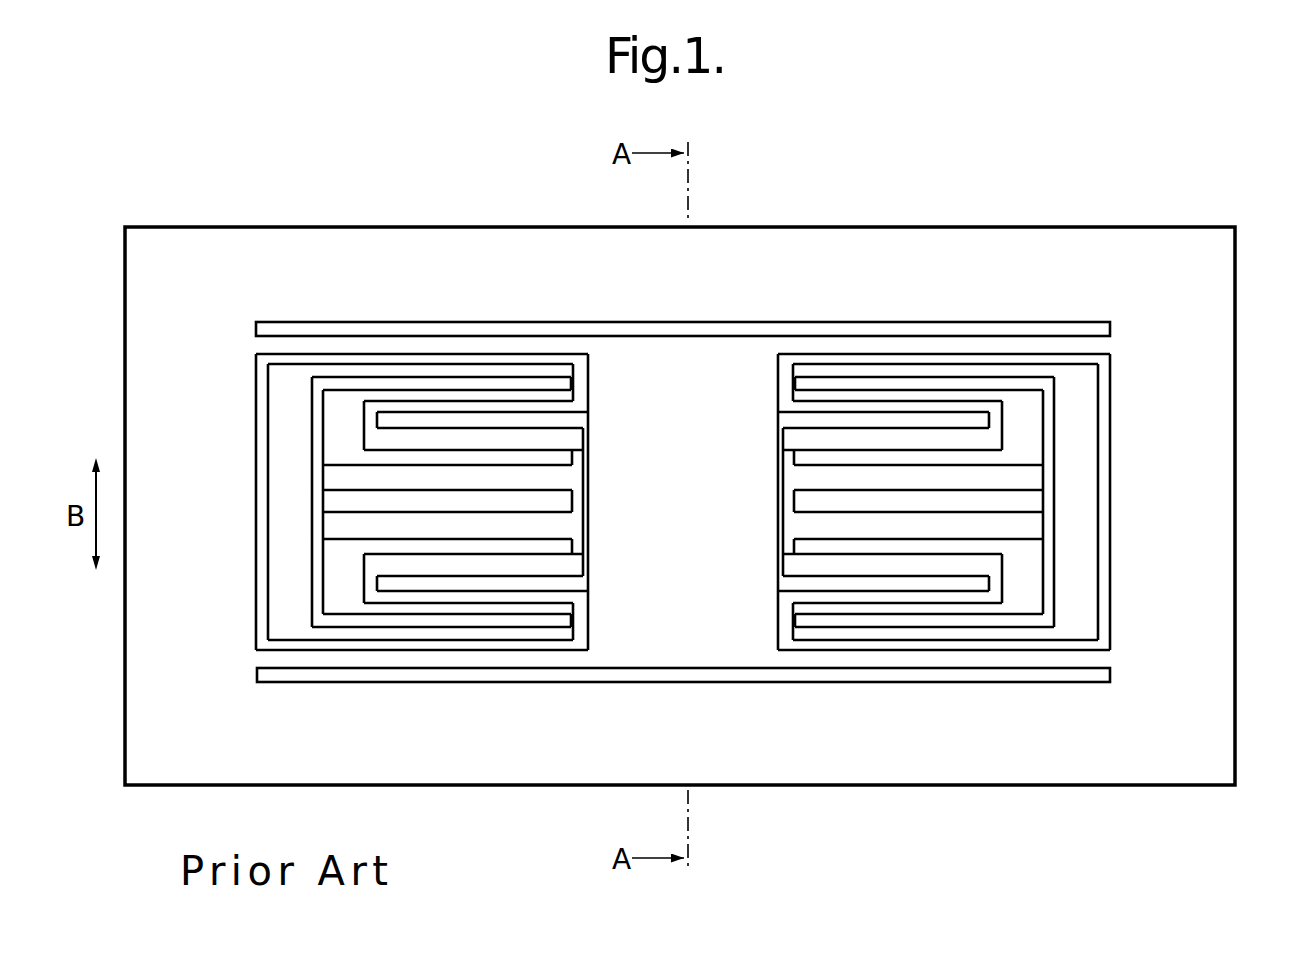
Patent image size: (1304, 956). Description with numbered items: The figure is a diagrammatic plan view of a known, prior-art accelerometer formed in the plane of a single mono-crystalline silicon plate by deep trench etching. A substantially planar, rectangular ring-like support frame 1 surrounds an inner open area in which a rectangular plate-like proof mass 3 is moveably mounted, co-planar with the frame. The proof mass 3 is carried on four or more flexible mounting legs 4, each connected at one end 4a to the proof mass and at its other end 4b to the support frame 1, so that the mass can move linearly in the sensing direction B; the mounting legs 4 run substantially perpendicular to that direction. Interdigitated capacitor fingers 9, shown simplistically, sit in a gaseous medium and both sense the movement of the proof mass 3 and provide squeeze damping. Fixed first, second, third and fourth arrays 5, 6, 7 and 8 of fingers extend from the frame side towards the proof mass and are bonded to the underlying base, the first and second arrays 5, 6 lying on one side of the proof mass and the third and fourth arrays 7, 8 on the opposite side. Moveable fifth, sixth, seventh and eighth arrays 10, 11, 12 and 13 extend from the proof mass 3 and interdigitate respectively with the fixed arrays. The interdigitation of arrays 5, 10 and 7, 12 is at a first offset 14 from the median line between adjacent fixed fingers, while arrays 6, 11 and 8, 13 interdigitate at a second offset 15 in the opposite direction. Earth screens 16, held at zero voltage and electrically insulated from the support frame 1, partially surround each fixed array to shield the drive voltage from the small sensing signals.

The support frame 1 is at (1215, 750).
The proof mass 3 is at (697, 516).
The mounting legs 4 is at (461, 345).
The mounting leg end connected to the proof mass 4a is at (588, 343).
The mounting leg end connected to the support frame 4b is at (257, 347).
The first array of fingers 5 is at (390, 443).
The second array of fingers 6 is at (385, 558).
The third array of fingers 7 is at (980, 440).
The fourth array of fingers 8 is at (974, 562).
The capacitor fingers 9 is at (423, 397).
The fifth array of fingers 10 is at (586, 418).
The sixth array of fingers 11 is at (487, 580).
The seventh array of fingers 12 is at (978, 418).
The eighth array of fingers 13 is at (940, 580).
The first offset 14 is at (538, 403).
The second offset 15 is at (450, 562).
The earth screens 16 is at (295, 457).